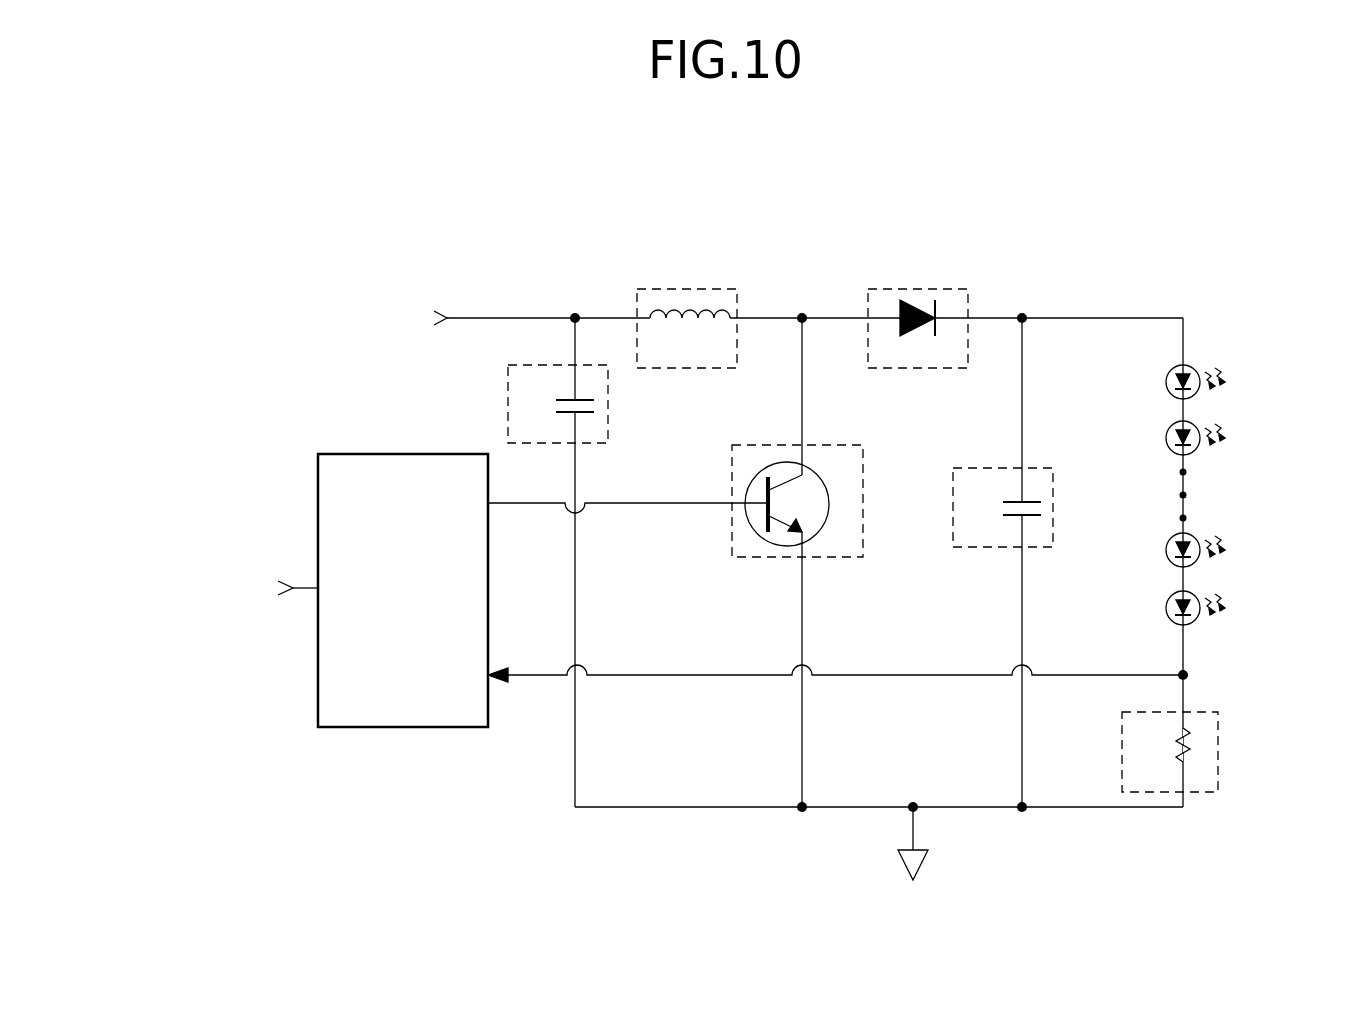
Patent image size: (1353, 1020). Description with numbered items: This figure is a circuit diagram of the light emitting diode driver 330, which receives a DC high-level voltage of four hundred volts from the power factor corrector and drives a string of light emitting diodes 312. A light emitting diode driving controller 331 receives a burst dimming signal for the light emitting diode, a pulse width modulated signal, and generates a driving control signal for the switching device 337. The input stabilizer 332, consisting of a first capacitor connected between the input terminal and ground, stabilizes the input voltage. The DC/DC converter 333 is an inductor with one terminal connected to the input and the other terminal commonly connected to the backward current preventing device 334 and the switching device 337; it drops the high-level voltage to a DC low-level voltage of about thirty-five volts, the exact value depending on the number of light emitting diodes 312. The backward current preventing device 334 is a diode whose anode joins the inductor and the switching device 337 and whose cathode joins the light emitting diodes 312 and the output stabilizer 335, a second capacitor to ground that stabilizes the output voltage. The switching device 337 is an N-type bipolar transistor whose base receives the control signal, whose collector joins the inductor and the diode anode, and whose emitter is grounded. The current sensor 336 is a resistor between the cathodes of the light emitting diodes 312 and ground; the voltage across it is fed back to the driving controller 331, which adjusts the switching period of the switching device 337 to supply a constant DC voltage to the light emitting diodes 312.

The light emitting diode driver 330 is at (288, 270).
The light emitting diode driving controller 331 is at (400, 454).
The input stabilizer 332 is at (508, 404).
The DC/DC converter 333 is at (668, 289).
The backward current preventing device 334 is at (914, 289).
The output stabilizer 335 is at (1053, 488).
The current sensor 336 is at (1218, 746).
The switching device 337 is at (751, 445).
The light emitting diodes 312 is at (1260, 345).